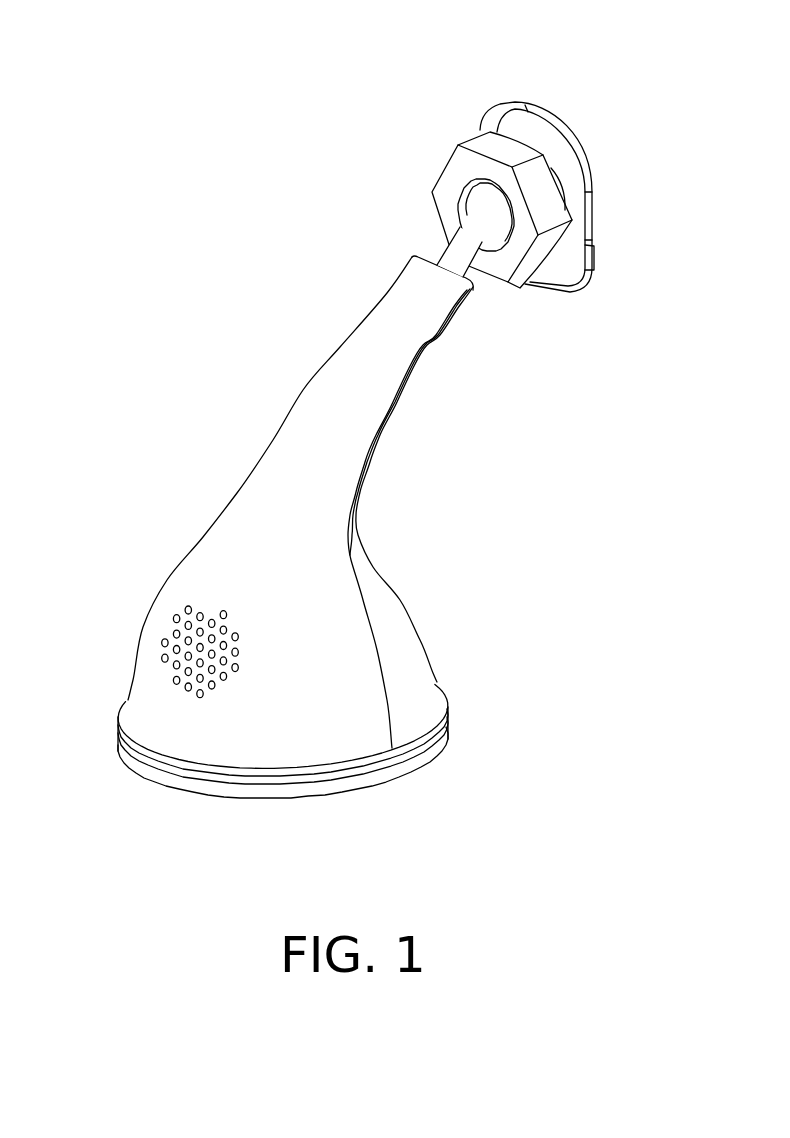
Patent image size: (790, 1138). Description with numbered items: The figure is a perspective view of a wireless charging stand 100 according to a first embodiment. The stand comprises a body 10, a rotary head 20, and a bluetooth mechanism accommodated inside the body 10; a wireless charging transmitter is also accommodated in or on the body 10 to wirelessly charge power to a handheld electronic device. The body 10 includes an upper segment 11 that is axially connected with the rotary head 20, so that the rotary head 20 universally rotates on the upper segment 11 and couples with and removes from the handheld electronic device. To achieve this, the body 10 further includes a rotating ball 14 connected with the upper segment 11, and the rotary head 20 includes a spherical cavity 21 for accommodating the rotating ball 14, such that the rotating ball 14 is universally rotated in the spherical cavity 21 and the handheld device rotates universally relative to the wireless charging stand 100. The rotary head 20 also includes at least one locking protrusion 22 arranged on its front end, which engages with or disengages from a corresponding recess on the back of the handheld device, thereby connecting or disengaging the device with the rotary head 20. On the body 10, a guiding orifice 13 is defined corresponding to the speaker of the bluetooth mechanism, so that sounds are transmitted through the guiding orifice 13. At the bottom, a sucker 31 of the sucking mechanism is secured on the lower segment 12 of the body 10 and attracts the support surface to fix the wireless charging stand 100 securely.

The wireless charging stand 100 is at (84, 43).
The body 10 is at (549, 352).
The upper segment 11 is at (427, 343).
The lower segment 12 is at (406, 634).
The guiding orifice 13 is at (162, 647).
The rotating ball 14 is at (472, 212).
The rotary head 20 is at (450, 190).
The spherical cavity 21 is at (460, 187).
The locking protrusion 22 is at (595, 262).
The sucker 31 is at (437, 745).